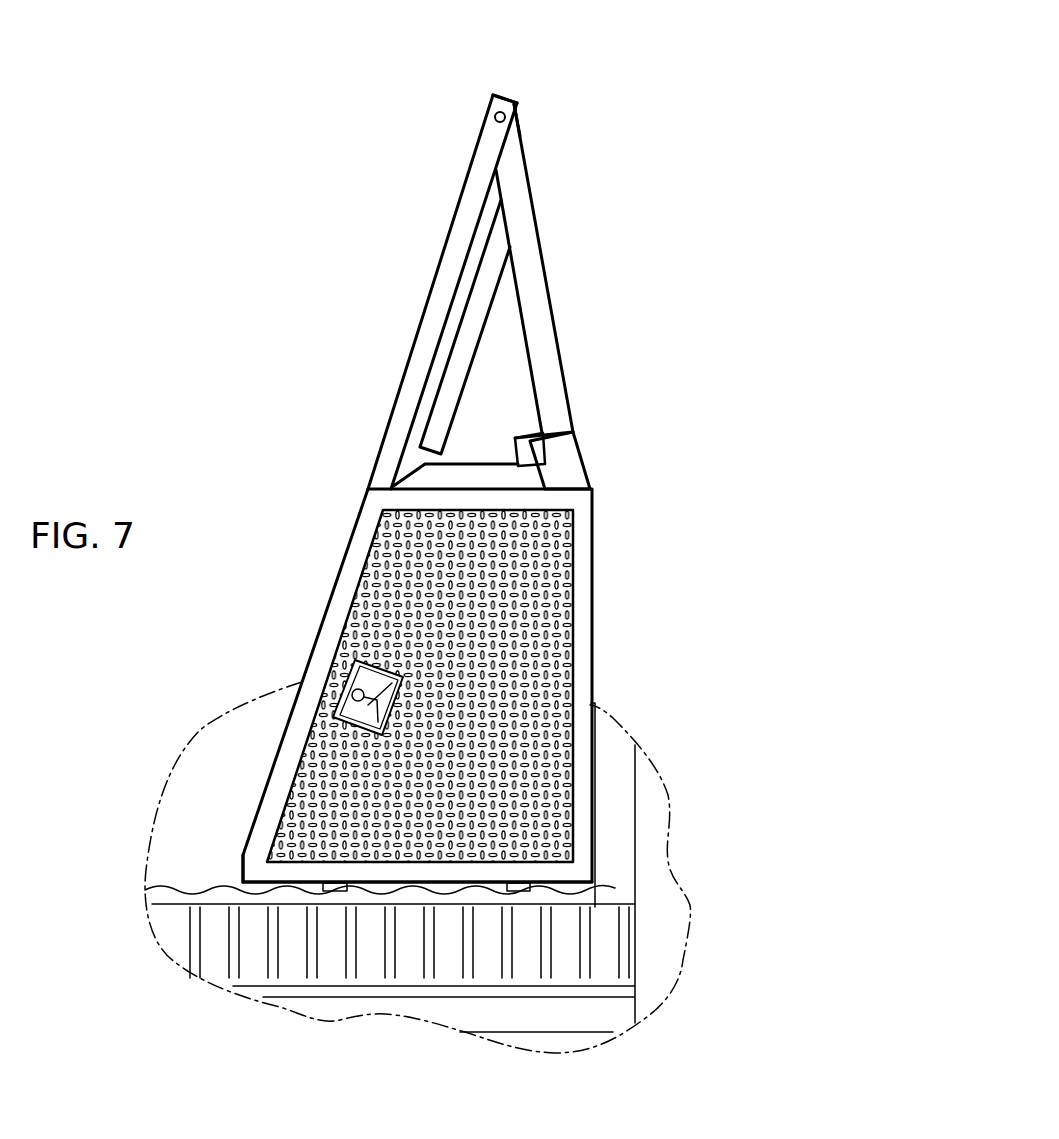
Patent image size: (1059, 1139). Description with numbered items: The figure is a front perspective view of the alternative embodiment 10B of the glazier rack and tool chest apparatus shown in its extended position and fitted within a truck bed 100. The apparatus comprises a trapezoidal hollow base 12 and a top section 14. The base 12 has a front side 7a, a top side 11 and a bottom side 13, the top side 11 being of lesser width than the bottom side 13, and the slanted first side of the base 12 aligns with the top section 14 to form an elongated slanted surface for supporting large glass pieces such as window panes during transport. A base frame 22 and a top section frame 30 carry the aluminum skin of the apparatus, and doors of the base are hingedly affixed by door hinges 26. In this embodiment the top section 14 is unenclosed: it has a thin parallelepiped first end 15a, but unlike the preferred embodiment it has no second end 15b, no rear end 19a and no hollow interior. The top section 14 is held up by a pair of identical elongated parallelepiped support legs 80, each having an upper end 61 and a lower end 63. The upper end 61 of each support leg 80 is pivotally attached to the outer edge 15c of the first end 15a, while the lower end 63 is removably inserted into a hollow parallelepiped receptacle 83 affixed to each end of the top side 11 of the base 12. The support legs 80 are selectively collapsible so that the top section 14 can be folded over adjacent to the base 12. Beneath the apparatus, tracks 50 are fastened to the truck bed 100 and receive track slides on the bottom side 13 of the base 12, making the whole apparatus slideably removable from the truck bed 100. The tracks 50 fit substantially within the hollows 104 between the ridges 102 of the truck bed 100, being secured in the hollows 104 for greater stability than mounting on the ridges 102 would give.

The alternative embodiment 10B is at (681, 268).
The top section 14 is at (352, 453).
The first end 15a is at (431, 290).
The second end 15b is at (489, 162).
The outer edge 15c is at (508, 104).
The upper end 61 is at (513, 140).
The top section frame 30 is at (540, 312).
The support legs 80 is at (541, 268).
The rear end 19a is at (492, 270).
The lower end 63 is at (543, 412).
The receptacles 83 is at (577, 441).
The top side 11 is at (562, 448).
The base frame 22 is at (283, 866).
The door hinges 26 is at (573, 558).
The front side 7a is at (613, 757).
The bottom side 13 is at (197, 922).
The base 12 is at (372, 892).
The tracks 50 is at (528, 897).
The truck bed 100 is at (590, 992).
The ridges 102 is at (485, 945).
The hollows 104 is at (450, 938).